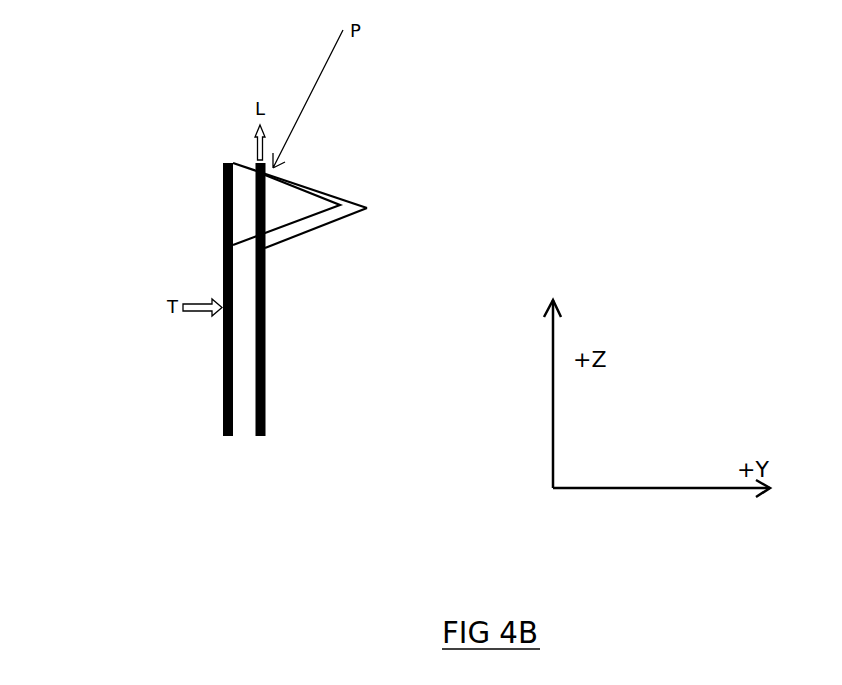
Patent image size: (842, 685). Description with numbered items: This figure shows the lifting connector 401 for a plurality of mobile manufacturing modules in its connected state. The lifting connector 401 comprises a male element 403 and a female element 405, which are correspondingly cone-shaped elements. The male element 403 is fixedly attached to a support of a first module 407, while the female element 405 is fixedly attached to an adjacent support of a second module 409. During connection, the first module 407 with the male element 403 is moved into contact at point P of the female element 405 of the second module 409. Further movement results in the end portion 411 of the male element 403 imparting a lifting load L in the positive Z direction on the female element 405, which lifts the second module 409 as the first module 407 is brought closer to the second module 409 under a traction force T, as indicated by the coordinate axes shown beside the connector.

The lifting connector 401 is at (302, 148).
The male element 403 is at (246, 165).
The female element 405 is at (353, 218).
The first module 407 is at (223, 279).
The second module 409 is at (266, 374).
The end portion 411 is at (335, 197).